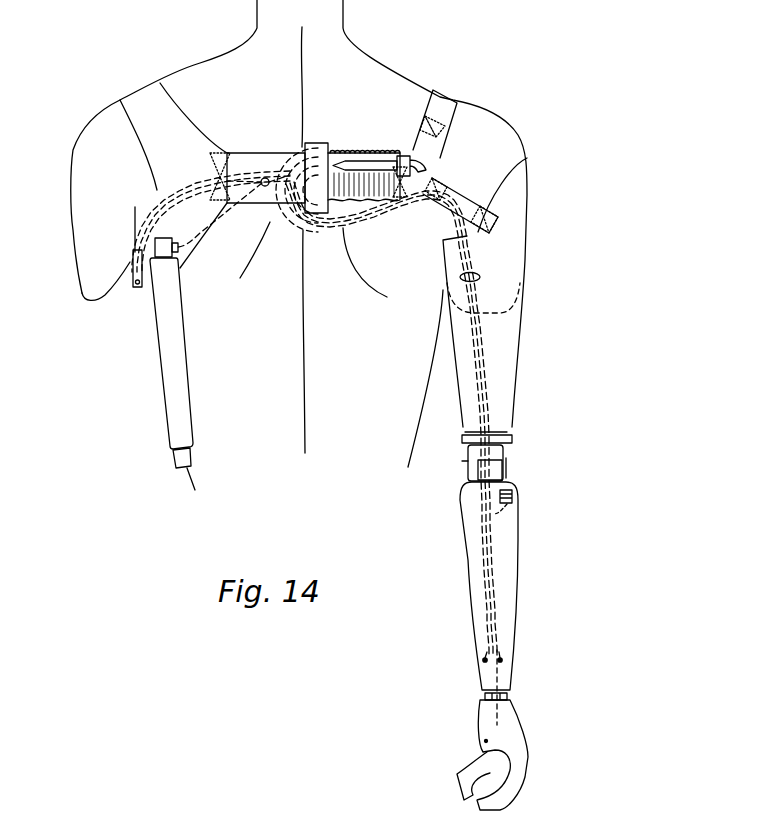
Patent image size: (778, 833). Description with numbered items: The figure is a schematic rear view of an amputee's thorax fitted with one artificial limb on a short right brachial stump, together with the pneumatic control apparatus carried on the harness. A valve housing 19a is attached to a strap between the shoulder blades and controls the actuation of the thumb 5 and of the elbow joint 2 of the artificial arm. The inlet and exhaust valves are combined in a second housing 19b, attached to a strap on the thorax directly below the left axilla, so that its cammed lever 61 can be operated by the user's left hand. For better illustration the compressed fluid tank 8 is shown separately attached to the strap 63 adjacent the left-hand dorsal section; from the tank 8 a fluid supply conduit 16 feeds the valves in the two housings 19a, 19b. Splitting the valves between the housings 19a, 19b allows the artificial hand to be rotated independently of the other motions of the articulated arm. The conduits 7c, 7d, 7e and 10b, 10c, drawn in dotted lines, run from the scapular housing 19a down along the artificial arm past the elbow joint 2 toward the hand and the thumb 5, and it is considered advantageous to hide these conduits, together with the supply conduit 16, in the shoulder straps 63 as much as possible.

The shoulder strap 63 is at (167, 147).
The valve housing 19a is at (315, 160).
The fluid supply conduit 16 is at (203, 233).
The compressed fluid tank 8 is at (178, 360).
The second housing 19b is at (128, 268).
The cammed lever 61 is at (84, 298).
The conduit 7c is at (490, 417).
The elbow joint 2 is at (493, 462).
The conduit 10b is at (505, 516).
The conduit 7d is at (488, 653).
The conduit 10c is at (500, 653).
The conduit 7e is at (493, 678).
The thumb 5 is at (468, 763).